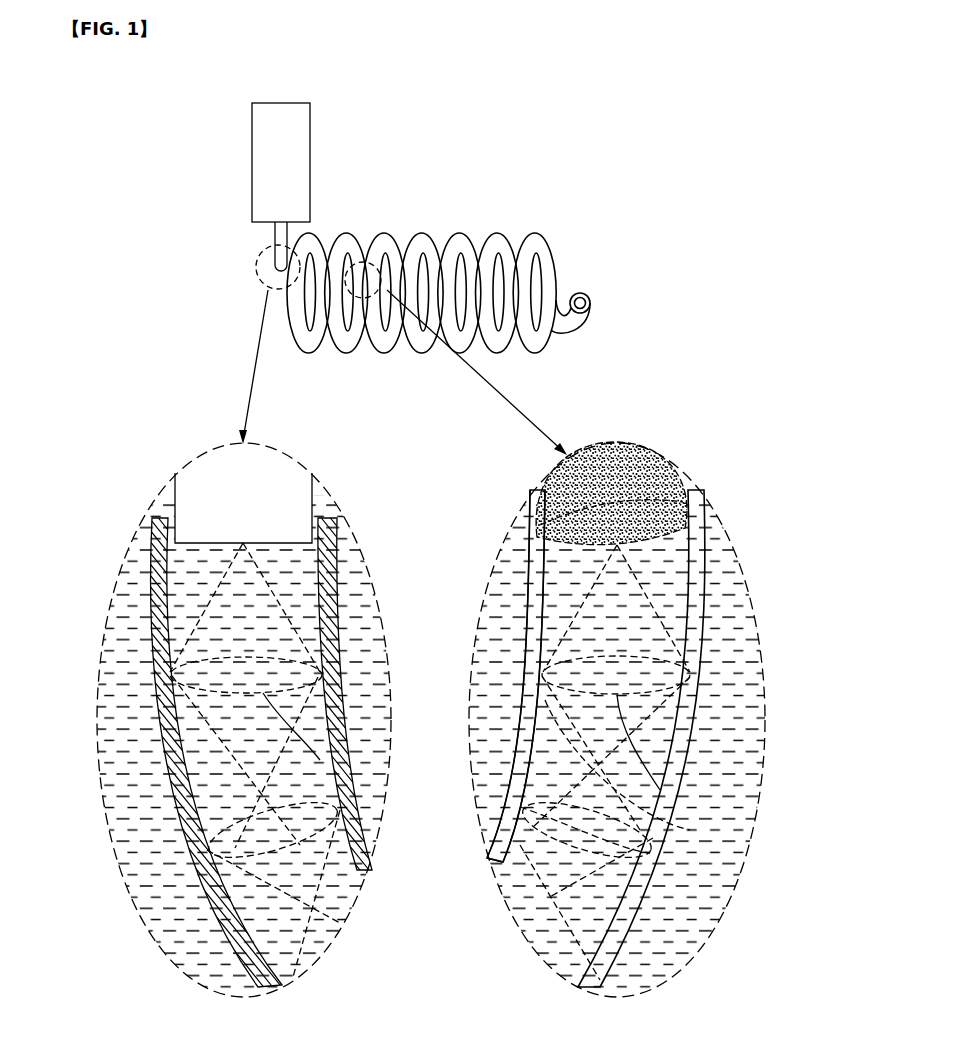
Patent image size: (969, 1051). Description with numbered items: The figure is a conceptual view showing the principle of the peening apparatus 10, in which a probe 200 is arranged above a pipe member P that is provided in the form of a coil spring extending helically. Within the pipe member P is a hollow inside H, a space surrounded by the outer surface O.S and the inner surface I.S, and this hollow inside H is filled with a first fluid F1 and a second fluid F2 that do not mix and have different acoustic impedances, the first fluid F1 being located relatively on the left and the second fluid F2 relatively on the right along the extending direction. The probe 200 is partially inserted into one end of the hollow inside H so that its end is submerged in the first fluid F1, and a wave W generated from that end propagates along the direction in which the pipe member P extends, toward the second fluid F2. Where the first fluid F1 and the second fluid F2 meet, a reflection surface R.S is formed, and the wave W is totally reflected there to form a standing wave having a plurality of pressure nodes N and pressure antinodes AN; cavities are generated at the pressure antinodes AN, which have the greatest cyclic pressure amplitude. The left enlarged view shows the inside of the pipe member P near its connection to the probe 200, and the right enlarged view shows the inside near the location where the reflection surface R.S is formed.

The peening apparatus 10 is at (199, 98).
The probe 200 is at (262, 157).
The pipe member P is at (563, 240).
The first fluid F1 is at (297, 583).
The second fluid F2 is at (613, 447).
The hollow inside H is at (233, 621).
The wave W is at (318, 706).
The pressure antinode AN is at (300, 800).
The reflection surface R.S is at (670, 518).
The outer surface O.S is at (525, 652).
The inner surface I.S is at (540, 566).
The pressure node N is at (600, 780).